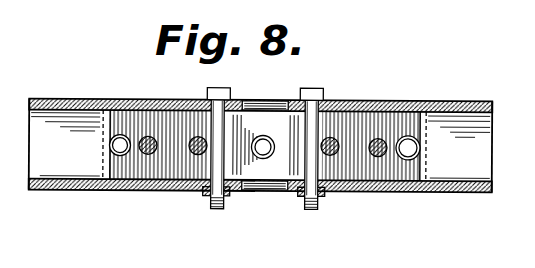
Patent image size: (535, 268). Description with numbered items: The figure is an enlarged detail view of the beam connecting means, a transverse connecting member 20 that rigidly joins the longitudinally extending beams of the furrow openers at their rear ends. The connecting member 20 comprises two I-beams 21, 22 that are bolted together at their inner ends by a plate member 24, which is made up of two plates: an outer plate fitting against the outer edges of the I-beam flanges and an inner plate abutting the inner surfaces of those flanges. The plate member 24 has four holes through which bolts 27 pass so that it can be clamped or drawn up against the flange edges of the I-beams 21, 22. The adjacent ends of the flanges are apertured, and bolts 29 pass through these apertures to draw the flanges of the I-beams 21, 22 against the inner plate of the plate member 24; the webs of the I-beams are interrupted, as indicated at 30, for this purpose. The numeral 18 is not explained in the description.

The tubular beam 18 is at (246, 145).
The transverse connecting member 20 is at (149, 193).
The I-beam 21 is at (28, 190).
The I-beam 22 is at (472, 168).
The plate member 24 is at (268, 190).
The bolts 27 is at (372, 150).
The bolts 29 is at (311, 122).
The web interruption 30 is at (420, 124).